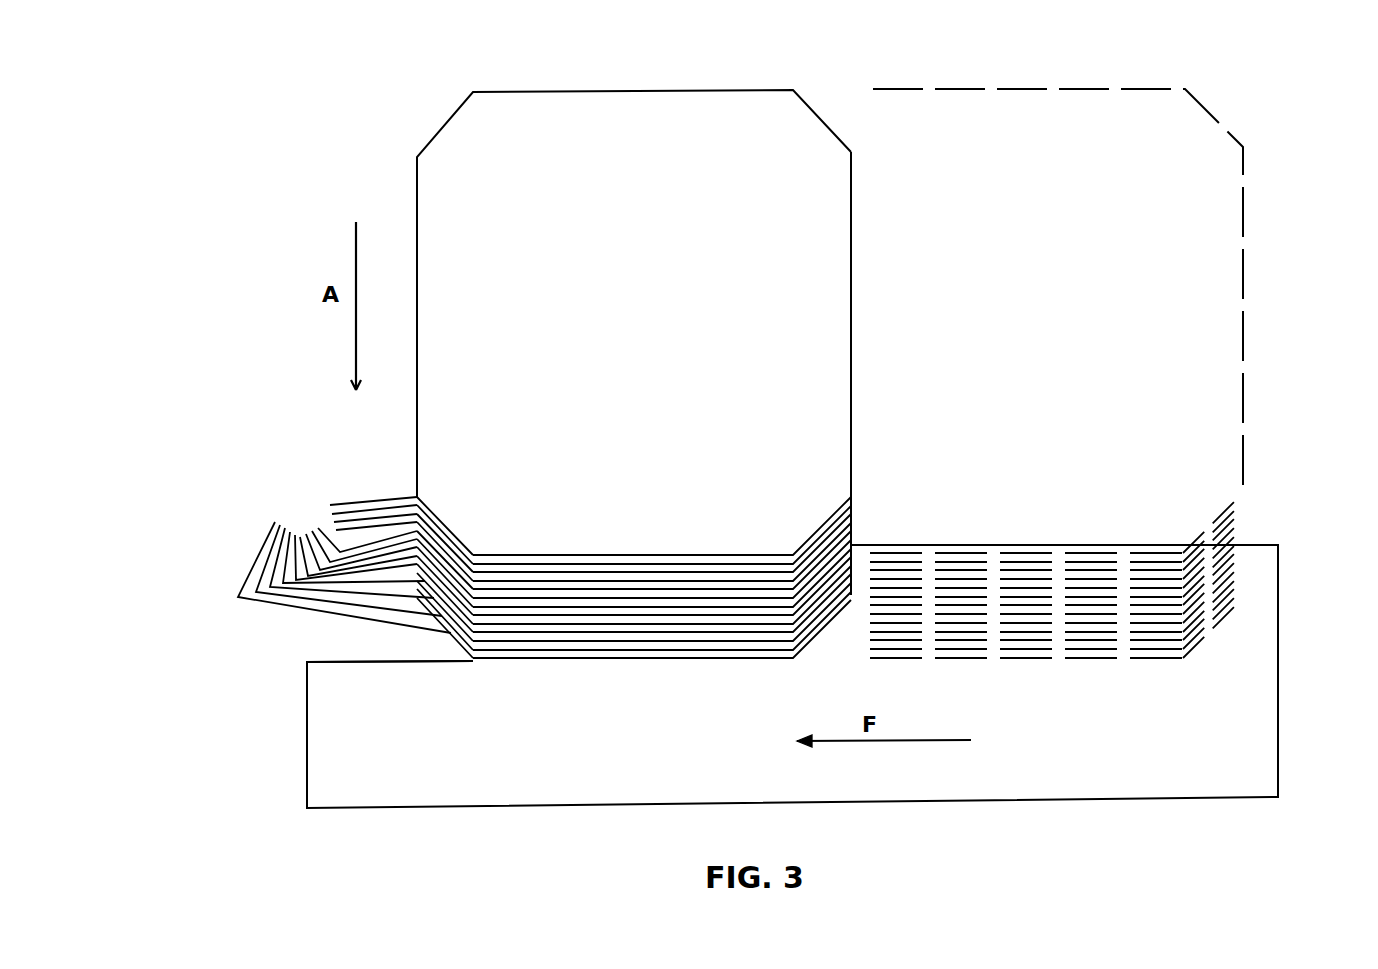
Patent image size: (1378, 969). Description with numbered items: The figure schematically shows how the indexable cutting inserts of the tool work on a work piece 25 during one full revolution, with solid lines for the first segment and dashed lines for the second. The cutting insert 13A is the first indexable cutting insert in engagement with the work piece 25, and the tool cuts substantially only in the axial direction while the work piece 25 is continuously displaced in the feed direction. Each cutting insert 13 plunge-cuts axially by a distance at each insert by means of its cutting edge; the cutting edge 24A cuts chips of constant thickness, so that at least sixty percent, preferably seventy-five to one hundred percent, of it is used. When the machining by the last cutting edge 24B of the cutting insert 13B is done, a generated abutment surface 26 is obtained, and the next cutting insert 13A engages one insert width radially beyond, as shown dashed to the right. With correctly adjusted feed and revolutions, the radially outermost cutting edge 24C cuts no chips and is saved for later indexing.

The cutting insert 13 is at (795, 626).
The first indexable cutting insert 13A is at (691, 95).
The second indexable cutting insert 13B is at (457, 637).
The cutting edge 24A is at (623, 557).
The last cutting edge 24B is at (627, 662).
The radially outermost cutting edge 24C is at (851, 314).
The work piece 25 is at (1143, 772).
The generated abutment surface 26 is at (385, 662).